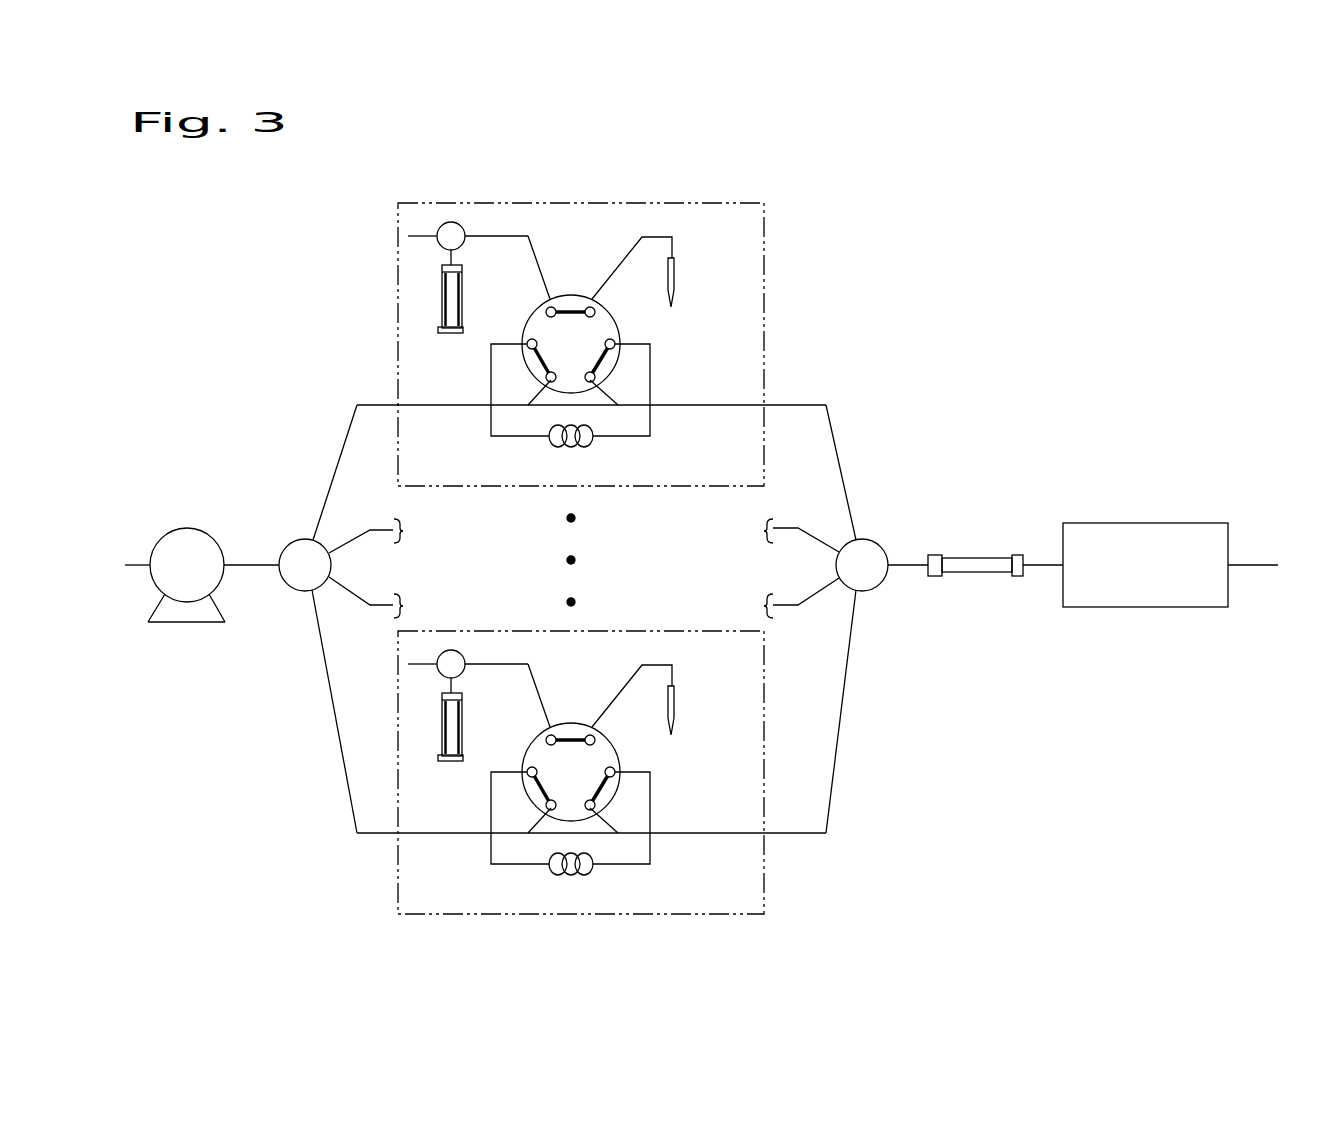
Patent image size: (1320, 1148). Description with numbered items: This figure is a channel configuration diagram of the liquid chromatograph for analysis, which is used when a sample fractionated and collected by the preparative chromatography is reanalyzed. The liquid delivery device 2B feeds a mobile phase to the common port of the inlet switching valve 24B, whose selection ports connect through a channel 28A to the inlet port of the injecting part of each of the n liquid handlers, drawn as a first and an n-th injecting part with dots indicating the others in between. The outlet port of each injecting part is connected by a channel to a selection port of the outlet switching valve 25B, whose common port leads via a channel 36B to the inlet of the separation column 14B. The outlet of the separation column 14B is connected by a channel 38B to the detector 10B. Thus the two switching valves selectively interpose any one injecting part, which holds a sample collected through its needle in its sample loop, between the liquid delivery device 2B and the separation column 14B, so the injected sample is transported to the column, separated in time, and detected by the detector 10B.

The liquid delivery device 2B is at (195, 527).
The inlet switching valve 24B is at (297, 538).
The channel 28A is at (368, 607).
The outlet switching valve 25B is at (873, 537).
The channel 36B is at (908, 567).
The separation column 14B is at (985, 553).
The channel 38B is at (1035, 567).
The detector 10B is at (1156, 522).